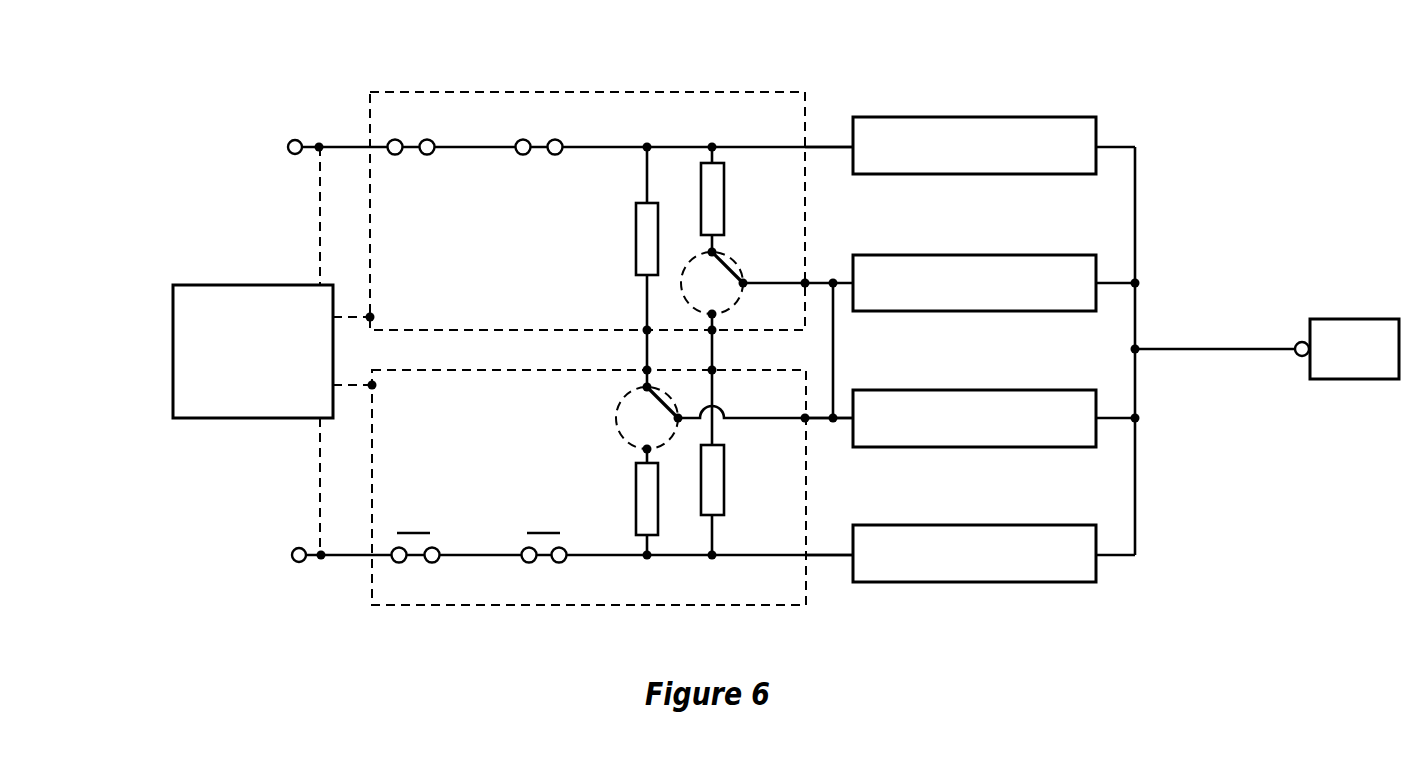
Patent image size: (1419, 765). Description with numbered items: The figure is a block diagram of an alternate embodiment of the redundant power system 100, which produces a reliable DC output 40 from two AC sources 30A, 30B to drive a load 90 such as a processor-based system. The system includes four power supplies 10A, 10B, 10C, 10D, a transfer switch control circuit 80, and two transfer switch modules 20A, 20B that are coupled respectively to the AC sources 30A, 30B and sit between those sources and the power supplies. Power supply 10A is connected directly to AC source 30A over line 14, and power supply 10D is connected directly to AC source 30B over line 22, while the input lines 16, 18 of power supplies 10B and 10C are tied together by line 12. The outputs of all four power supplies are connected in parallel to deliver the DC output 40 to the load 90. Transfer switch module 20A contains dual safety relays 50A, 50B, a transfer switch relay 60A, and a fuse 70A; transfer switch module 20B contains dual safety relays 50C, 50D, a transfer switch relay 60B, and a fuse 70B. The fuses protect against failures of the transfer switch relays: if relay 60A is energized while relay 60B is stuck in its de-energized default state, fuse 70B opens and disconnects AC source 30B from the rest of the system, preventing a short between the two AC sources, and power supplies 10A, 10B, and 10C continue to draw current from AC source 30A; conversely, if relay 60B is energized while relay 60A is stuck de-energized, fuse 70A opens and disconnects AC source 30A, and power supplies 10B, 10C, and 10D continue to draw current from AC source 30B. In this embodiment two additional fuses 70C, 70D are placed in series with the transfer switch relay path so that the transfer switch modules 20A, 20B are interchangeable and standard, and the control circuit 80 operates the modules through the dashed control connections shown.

The power system 100 is at (439, 46).
The AC source 30A is at (292, 154).
The AC source 30B is at (296, 562).
The transfer switch control circuit 80 is at (255, 285).
The transfer switch module 20A is at (672, 92).
The transfer switch module 20B is at (590, 606).
The safety relay 50A is at (422, 140).
The safety relay 50B is at (550, 140).
The safety relay 50C is at (413, 535).
The safety relay 50D is at (542, 535).
The transfer switch relay 60A is at (722, 258).
The transfer switch relay 60B is at (616, 420).
The fuse 70A is at (635, 239).
The fuse 70B is at (636, 500).
The additional fuse 70C is at (724, 198).
The additional fuse 70D is at (725, 478).
The line 14 is at (818, 147).
The input line 16 is at (810, 283).
The line 12 is at (833, 370).
The input line 18 is at (815, 418).
The line 22 is at (815, 556).
The power supply 10A is at (975, 117).
The power supply 10B is at (975, 255).
The power supply 10C is at (975, 390).
The power supply 10D is at (975, 525).
The DC output 40 is at (1299, 356).
The load 90 is at (1375, 380).